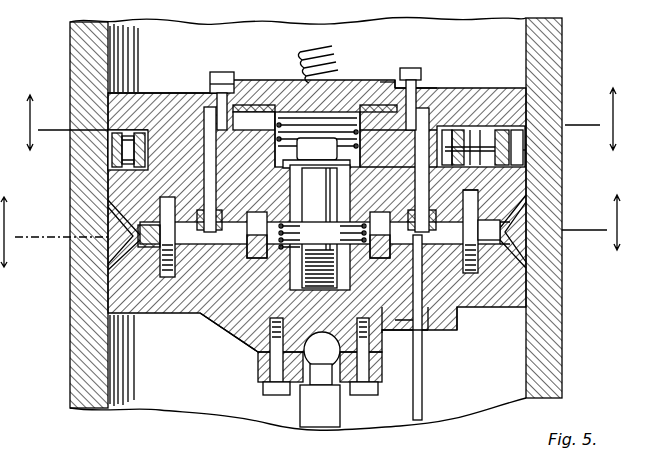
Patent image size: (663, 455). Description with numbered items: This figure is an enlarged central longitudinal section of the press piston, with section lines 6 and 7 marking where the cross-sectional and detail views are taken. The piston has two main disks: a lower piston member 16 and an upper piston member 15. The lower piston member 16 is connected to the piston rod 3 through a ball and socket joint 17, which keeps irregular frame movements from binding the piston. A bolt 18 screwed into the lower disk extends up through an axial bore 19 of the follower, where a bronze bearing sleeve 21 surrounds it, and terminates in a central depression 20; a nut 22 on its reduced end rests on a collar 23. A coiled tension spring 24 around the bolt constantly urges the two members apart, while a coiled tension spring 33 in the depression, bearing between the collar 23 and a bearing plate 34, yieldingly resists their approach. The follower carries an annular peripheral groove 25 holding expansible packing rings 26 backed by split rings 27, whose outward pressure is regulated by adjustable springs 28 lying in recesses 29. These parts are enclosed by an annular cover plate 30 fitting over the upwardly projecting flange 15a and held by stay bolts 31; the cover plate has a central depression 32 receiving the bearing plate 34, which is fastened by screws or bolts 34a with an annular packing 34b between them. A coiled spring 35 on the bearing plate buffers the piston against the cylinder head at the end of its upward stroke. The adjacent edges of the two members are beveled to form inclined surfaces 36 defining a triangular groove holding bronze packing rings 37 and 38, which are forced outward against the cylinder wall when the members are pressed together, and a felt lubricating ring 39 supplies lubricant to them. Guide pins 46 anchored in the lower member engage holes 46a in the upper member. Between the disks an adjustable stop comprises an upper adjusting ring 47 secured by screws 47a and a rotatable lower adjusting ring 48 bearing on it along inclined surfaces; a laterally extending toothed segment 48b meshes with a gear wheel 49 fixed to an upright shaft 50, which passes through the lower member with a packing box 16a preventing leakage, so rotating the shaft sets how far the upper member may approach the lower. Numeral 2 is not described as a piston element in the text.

The cylinder wall 2 is at (83, 342).
The piston rod 3 is at (315, 410).
The section line 6 is at (602, 222).
The section line 7 is at (321, 119).
The upper piston member 15 is at (137, 183).
The annular upwardly projecting flange 15a is at (380, 100).
The lower piston member 16 is at (221, 334).
The packing box 16a is at (440, 330).
The ball and socket joint 17 is at (285, 368).
The bolt 18 is at (320, 227).
The axial bore 19 is at (298, 198).
The central depression 20 is at (345, 120).
The bearing sleeve 21 is at (340, 178).
The nut 22 is at (316, 153).
The collar 23 is at (370, 135).
The coiled tension spring 24 is at (275, 245).
The annular peripheral groove 25 is at (110, 160).
The packing rings 26 is at (108, 158).
The split rings 27 is at (123, 140).
The springs 28 is at (470, 135).
The recesses 29 is at (448, 135).
The cover plate 30 is at (123, 115).
The stay bolts 31 is at (200, 110).
The annular depression 32 is at (252, 112).
The coiled tension spring 33 is at (280, 118).
The bearing plate 34 is at (390, 82).
The screws or bolts 34a is at (405, 80).
The annular packing 34b is at (257, 108).
The coiled spring 35 is at (318, 56).
The inclined surfaces 36 is at (110, 253).
The packing ring 37 is at (115, 218).
The packing ring 38 is at (118, 255).
The lubricating ring 39 is at (493, 238).
The guide pins 46 is at (478, 272).
The holes 46a is at (480, 193).
The upper adjusting ring 47 is at (222, 128).
The screws 47a is at (245, 130).
The lower adjusting ring 48 is at (219, 311).
The laterally extending segment 48b is at (400, 340).
The gear wheel 49 is at (452, 308).
The upright shaft 50 is at (422, 365).